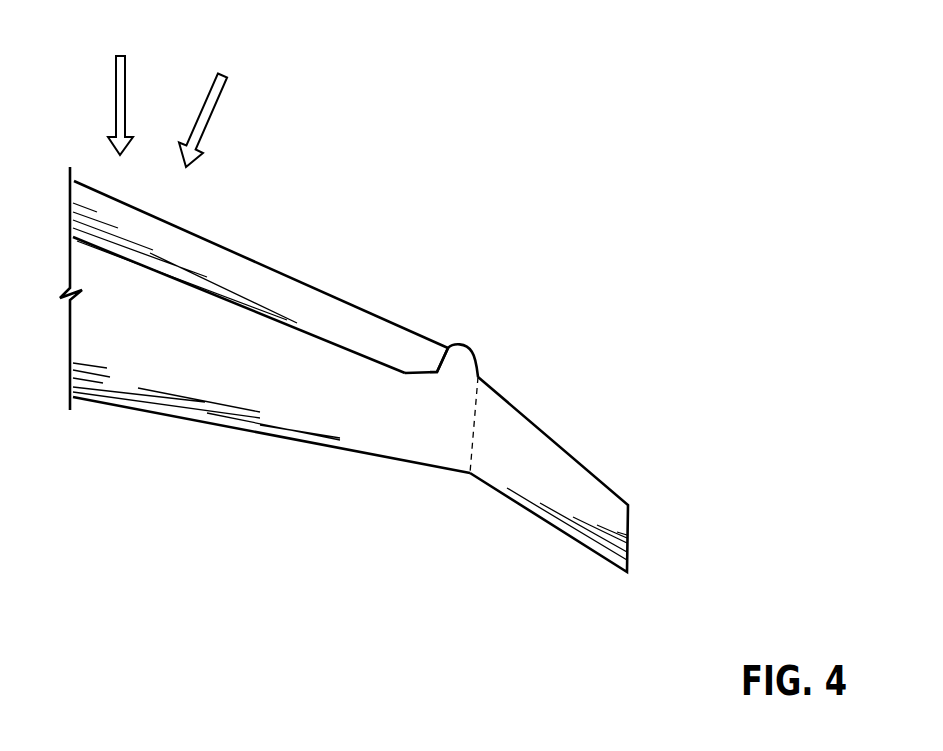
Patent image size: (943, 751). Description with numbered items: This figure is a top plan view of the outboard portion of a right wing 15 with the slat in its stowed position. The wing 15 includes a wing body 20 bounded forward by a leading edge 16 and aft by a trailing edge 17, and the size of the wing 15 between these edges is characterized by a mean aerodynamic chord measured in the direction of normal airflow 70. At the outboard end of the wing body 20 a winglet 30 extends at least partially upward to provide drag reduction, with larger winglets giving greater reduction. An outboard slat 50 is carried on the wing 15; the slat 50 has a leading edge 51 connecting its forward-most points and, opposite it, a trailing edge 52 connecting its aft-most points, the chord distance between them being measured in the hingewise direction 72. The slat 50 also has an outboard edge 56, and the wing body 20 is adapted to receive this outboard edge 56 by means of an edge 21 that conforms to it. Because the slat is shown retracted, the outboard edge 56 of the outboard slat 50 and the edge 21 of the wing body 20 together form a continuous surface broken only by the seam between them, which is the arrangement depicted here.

The wing 15 is at (613, 87).
The leading edge 16 is at (475, 353).
The trailing edge 17 is at (198, 425).
The wing body 20 is at (150, 386).
The edge 21 is at (441, 383).
The winglet 30 is at (582, 488).
The outboard slat 50 is at (193, 250).
The leading edge 51 is at (293, 273).
The trailing edge 52 is at (278, 320).
The outboard edge 56 is at (418, 358).
The normal airflow 70 is at (118, 88).
The hingewise direction 72 is at (220, 88).